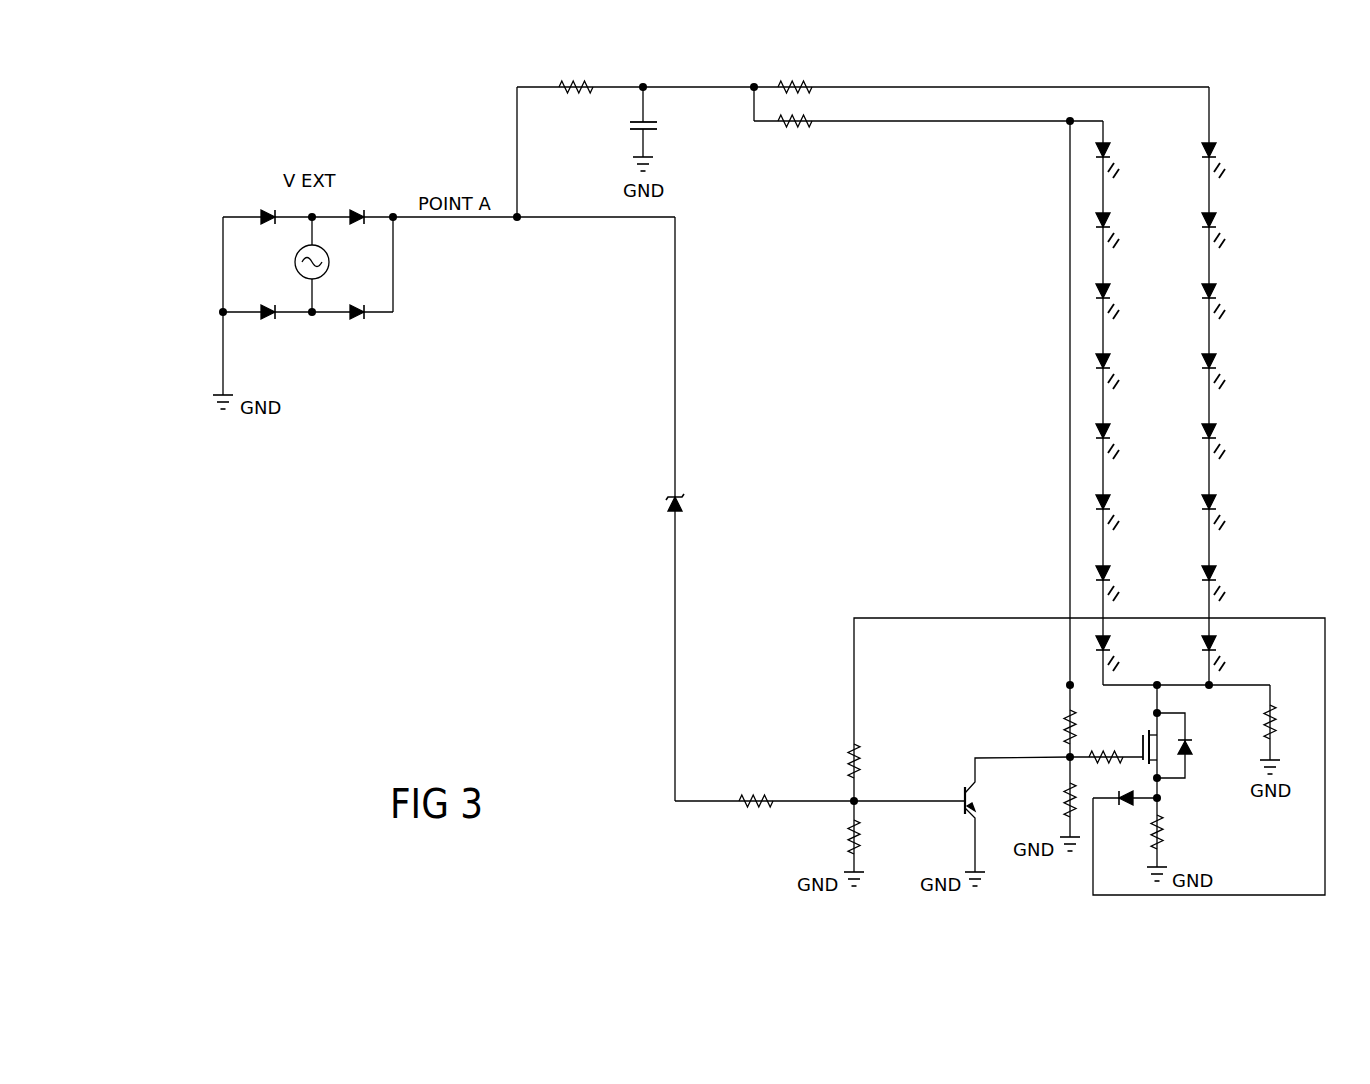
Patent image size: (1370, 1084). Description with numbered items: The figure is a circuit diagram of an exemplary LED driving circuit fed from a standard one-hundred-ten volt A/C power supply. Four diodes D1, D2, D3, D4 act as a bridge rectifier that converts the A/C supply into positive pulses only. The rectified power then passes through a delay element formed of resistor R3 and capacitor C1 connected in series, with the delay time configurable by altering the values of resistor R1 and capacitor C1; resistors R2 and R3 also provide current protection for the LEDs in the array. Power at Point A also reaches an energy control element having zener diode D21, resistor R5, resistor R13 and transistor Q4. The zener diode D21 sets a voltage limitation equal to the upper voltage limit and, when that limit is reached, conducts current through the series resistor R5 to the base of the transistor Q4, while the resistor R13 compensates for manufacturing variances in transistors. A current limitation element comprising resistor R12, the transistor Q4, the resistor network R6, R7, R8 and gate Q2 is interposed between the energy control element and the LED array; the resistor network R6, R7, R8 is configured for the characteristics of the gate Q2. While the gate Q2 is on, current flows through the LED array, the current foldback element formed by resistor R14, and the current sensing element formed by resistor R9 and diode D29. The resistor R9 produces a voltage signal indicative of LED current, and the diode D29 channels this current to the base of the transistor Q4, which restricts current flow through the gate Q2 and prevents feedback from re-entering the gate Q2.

The diode D1 is at (357, 207).
The diode D2 is at (268, 207).
The diode D3 is at (268, 323).
The diode D4 is at (357, 323).
The resistor R1 is at (576, 100).
The capacitor C1 is at (659, 122).
The resistor R2 is at (795, 99).
The resistor R3 is at (795, 132).
The zener diode D21 is at (696, 501).
The resistor R5 is at (756, 810).
The resistor R12 is at (835, 761).
The resistor R13 is at (835, 836).
The transistor Q4 is at (1017, 814).
The resistor R6 is at (1056, 727).
The resistor R7 is at (1106, 745).
The resistor R8 is at (1056, 800).
The gate Q2 is at (1183, 741).
The one-way zener diode D29 is at (1128, 810).
The resistor R9 is at (1172, 832).
The resistor R14 is at (1290, 722).